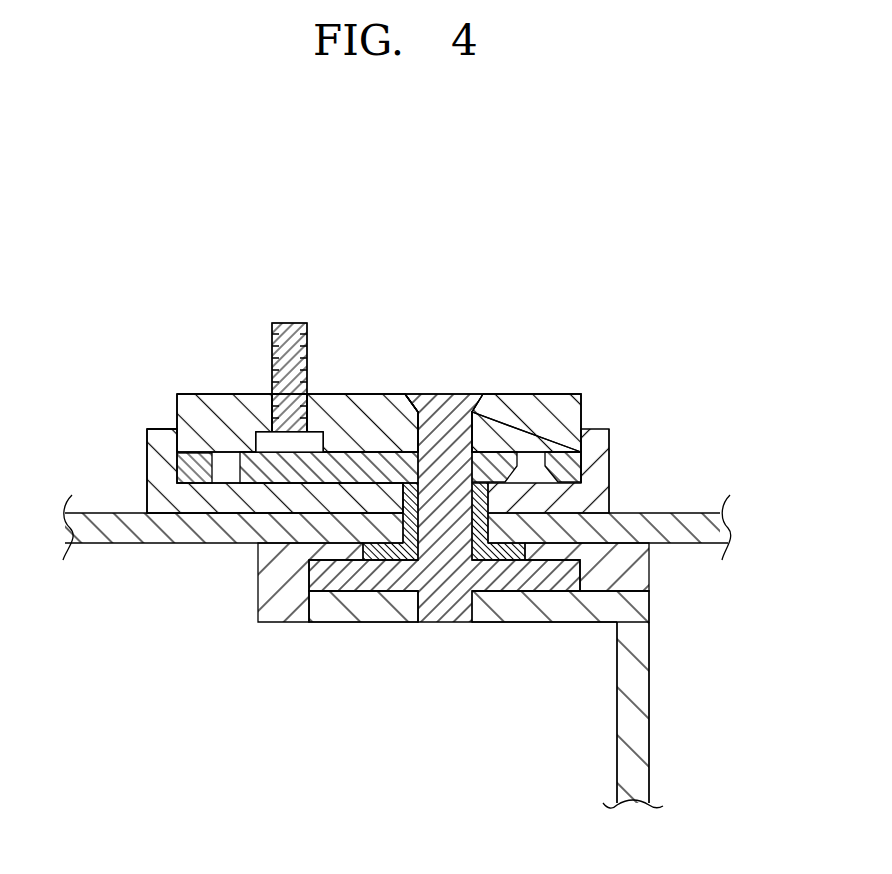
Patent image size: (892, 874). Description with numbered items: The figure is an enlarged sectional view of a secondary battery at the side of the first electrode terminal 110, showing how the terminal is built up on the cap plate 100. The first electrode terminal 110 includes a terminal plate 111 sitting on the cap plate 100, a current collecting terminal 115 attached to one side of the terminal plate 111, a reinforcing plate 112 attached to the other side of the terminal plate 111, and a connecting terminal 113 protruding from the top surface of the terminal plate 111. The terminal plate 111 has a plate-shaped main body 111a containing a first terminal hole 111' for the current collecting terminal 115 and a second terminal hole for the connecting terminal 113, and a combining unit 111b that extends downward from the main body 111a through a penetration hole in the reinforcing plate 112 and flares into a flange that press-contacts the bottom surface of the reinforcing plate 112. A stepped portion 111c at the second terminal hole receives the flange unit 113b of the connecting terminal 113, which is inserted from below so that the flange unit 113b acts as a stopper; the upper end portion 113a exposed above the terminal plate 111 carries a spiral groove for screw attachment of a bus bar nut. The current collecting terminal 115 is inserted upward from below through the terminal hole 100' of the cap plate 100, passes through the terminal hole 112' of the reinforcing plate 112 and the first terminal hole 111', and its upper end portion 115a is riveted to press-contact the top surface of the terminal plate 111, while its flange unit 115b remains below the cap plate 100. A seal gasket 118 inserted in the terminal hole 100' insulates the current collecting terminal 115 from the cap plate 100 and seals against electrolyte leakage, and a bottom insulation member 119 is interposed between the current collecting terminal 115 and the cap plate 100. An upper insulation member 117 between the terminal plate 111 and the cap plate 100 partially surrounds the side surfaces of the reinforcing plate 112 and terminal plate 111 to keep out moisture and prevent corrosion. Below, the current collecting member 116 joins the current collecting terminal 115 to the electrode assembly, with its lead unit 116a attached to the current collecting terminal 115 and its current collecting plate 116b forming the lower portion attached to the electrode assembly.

The cap plate 100 is at (389, 498).
The terminal hole 100' is at (402, 611).
The first electrode terminal 110 is at (541, 298).
The terminal plate 111 is at (391, 405).
The first terminal hole 111' is at (444, 374).
The main body 111a is at (187, 408).
The combining unit 111b is at (224, 480).
The stepped portion 111c is at (270, 427).
The reinforcing plate 112 is at (471, 456).
The terminal hole 112' is at (511, 406).
The connecting terminal 113 is at (270, 338).
The upper end portion 113a is at (291, 328).
The flange unit 113b is at (272, 440).
The current collecting terminal 115 is at (447, 508).
The upper end portion 115a is at (460, 394).
The flange unit 115b is at (548, 578).
The current collecting member 116 is at (765, 637).
The lead unit 116a is at (627, 605).
The current collecting plate 116b is at (636, 715).
The upper insulation member 117 is at (607, 428).
The seal gasket 118 is at (488, 531).
The bottom insulation member 119 is at (633, 568).